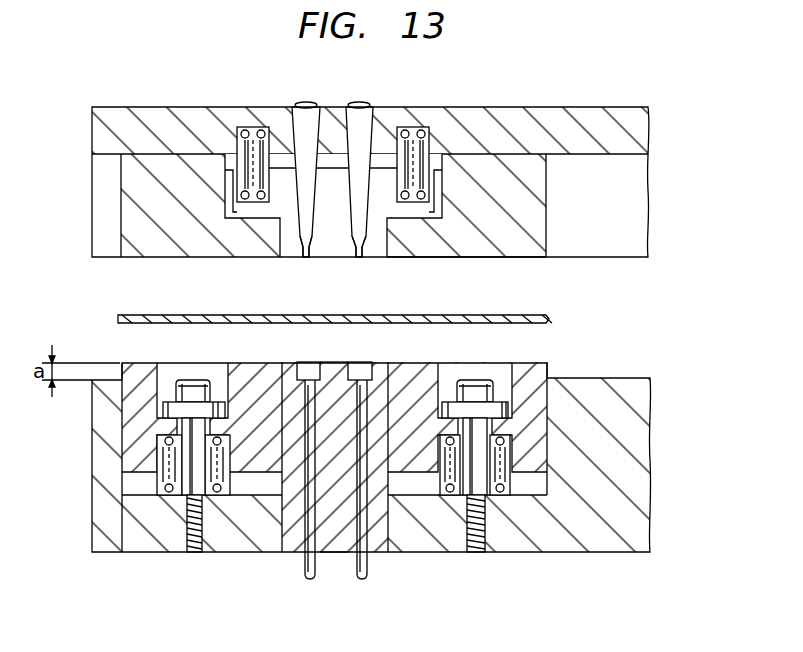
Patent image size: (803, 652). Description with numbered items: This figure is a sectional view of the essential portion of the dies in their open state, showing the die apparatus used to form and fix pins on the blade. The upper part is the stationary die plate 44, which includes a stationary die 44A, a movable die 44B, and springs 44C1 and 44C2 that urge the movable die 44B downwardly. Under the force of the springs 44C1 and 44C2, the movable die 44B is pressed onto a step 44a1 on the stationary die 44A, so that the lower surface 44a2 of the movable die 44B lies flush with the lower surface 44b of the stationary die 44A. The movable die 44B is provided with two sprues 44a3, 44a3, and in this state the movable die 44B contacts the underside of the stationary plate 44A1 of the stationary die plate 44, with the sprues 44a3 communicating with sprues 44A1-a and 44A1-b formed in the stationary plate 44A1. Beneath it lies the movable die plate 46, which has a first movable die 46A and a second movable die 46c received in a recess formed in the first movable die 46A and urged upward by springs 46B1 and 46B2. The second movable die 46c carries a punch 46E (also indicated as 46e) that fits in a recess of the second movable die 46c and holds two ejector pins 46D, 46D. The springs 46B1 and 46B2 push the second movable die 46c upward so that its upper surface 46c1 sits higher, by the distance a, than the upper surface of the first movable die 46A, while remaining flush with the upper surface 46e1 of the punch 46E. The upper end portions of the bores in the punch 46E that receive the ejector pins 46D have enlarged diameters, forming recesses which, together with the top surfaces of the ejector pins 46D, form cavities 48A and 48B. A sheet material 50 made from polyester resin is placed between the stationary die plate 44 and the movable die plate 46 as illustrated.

The stationary die plate 44 is at (686, 205).
The stationary plate 44A1 is at (556, 112).
The stationary die 44A is at (520, 243).
The movable die 44B is at (284, 107).
The spring 44C1 is at (235, 107).
The spring 44C2 is at (418, 107).
The step 44a1 is at (237, 257).
The lower surface of the movable die 44a2 is at (343, 257).
The sprue 44a3 is at (293, 242).
The sprue 44A1-a is at (306, 102).
The sprue 44A1-b is at (356, 103).
The lower surface of the stationary die 44b is at (448, 258).
The sheet material 50 is at (550, 320).
The movable die plate 46 is at (686, 422).
The first movable die 46A is at (641, 488).
The second movable die 46c is at (265, 365).
The upper surface of the second movable die 46c1 is at (520, 363).
The punch 46e is at (334, 362).
The upper surface of the punch 46e1 is at (323, 362).
The cavity 48A is at (305, 362).
The cavity 48B is at (360, 362).
The ejector pin 46D is at (305, 572).
The punch 46E is at (336, 553).
The spring 46B1 is at (167, 492).
The spring 46B2 is at (444, 492).